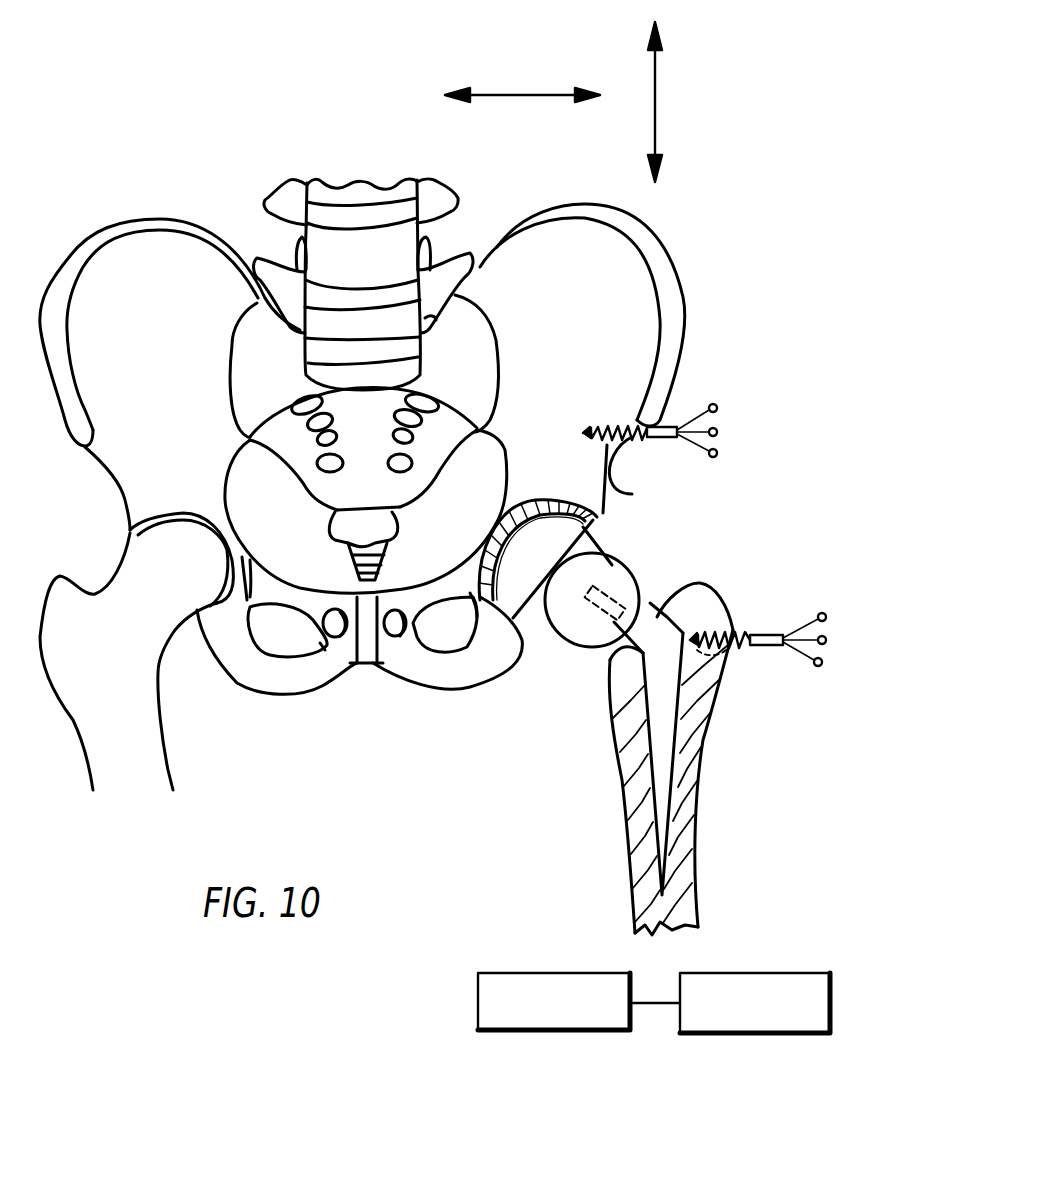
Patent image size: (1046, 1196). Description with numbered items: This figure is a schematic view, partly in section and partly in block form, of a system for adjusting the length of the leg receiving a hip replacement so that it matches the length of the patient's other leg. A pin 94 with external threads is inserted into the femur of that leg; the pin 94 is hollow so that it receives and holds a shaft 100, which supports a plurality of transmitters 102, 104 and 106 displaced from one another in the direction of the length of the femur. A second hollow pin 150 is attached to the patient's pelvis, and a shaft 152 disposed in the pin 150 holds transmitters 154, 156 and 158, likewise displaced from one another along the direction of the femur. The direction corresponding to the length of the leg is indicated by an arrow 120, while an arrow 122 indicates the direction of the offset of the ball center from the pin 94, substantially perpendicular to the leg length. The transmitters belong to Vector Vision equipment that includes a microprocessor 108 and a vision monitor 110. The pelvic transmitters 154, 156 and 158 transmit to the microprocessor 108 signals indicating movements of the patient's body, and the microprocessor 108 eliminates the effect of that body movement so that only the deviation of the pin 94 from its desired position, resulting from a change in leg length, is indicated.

The pin 94 is at (720, 627).
The shaft 100 is at (770, 636).
The transmitter 102 is at (820, 666).
The transmitter 104 is at (826, 638).
The transmitter 106 is at (823, 613).
The microprocessor 108 is at (780, 970).
The vision monitor 110 is at (532, 970).
The arrow 120 is at (652, 60).
The arrow 122 is at (512, 96).
The pin 150 is at (609, 466).
The shaft 152 is at (670, 413).
The transmitter 154 is at (715, 458).
The transmitter 156 is at (718, 434).
The transmitter 158 is at (720, 404).